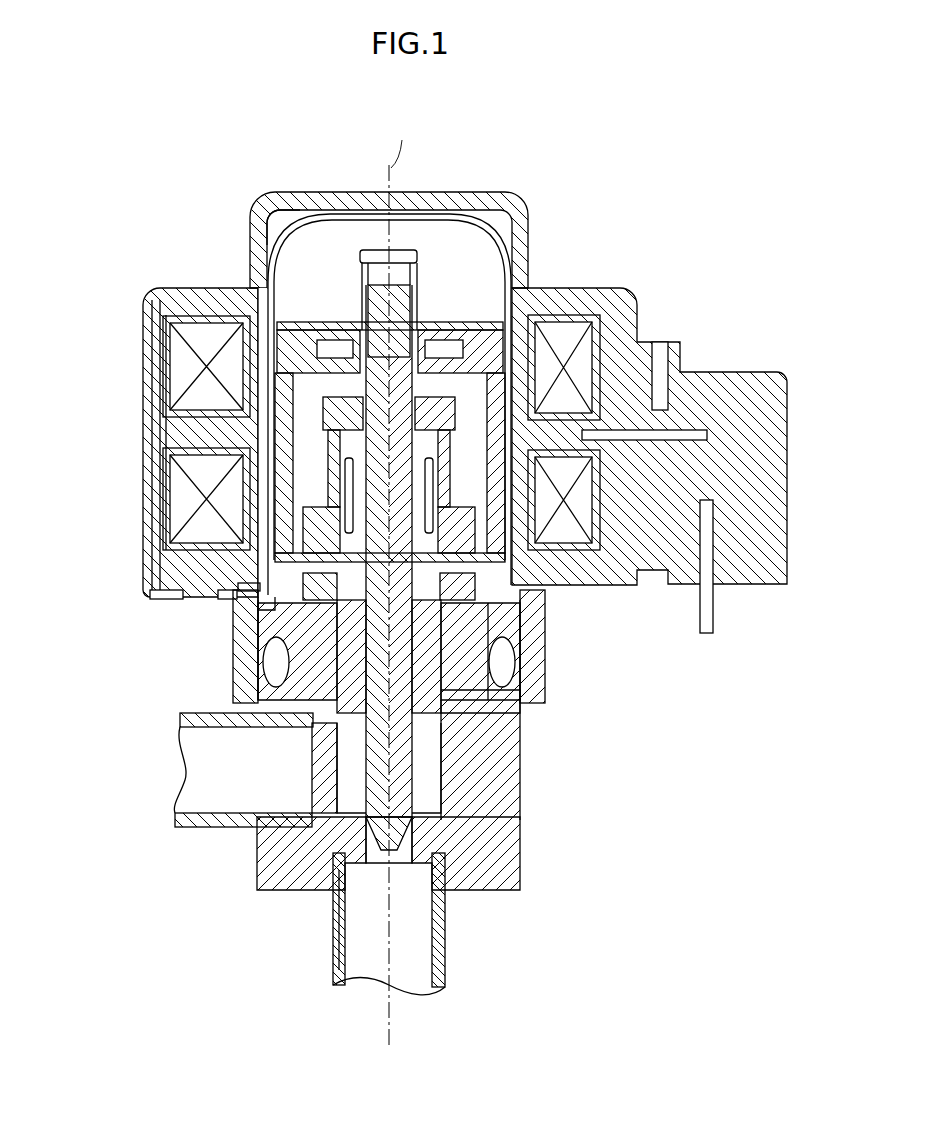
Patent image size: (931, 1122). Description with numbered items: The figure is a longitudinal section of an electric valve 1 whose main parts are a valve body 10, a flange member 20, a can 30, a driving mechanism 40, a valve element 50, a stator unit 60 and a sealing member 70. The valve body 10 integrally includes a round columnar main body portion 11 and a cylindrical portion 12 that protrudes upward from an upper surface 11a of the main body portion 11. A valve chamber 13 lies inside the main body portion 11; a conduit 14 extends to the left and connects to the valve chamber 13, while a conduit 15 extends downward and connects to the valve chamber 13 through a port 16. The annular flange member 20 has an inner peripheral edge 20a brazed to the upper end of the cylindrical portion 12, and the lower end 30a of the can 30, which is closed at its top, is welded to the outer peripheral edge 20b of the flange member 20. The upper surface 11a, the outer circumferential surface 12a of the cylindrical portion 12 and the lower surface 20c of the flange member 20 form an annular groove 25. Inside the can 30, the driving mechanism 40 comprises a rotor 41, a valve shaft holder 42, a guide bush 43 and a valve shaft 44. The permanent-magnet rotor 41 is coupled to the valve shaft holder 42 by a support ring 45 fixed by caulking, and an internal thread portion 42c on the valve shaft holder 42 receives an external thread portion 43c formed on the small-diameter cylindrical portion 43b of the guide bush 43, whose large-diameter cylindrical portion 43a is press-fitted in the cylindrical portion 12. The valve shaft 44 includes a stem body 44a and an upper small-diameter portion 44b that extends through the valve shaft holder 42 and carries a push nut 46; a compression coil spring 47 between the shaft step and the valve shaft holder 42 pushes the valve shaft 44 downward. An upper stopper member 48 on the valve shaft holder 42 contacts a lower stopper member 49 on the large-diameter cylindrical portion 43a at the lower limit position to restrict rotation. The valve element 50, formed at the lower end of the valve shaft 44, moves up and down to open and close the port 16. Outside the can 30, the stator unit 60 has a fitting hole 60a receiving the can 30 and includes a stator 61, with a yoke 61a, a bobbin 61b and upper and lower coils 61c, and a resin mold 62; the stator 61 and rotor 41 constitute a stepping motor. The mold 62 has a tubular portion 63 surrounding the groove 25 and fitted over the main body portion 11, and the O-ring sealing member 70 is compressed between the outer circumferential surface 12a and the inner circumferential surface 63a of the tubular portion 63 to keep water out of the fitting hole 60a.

The electric valve 1 is at (408, 571).
The valve body 10 is at (525, 880).
The main body portion 11 is at (530, 810).
The upper surface 11a is at (525, 690).
The cylindrical portion 12 is at (300, 690).
The outer circumferential surface 12a is at (540, 650).
The valve chamber 13 is at (430, 790).
The conduit 14 is at (222, 827).
The conduit 15 is at (445, 930).
The port 16 is at (410, 845).
The flange member 20 is at (240, 640).
The inner peripheral edge 20a is at (250, 588).
The outer peripheral edge 20b is at (248, 660).
The lower surface 20c is at (545, 625).
The groove 25 is at (500, 705).
The can 30 is at (408, 382).
The lower end 30a is at (262, 603).
The driving mechanism 40 is at (339, 252).
The rotor 41 is at (245, 277).
The valve shaft holder 42 is at (335, 385).
The internal thread portion 42c is at (345, 497).
The guide bush 43 is at (310, 550).
The large-diameter cylindrical portion 43a is at (340, 742).
The small-diameter cylindrical portion 43b is at (330, 472).
The external thread portion 43c is at (340, 520).
The valve shaft 44 is at (370, 800).
The stem body 44a is at (365, 775).
The upper small-diameter portion 44b is at (418, 260).
The support ring 45 is at (248, 247).
The push nut 46 is at (343, 316).
The compression coil spring 47 is at (165, 327).
The upper stopper member 48 is at (618, 600).
The lower stopper member 49 is at (645, 612).
The valve element 50 is at (335, 926).
The stator unit 60 is at (487, 192).
The fitting hole 60a is at (253, 216).
The stator 61 is at (144, 442).
The yoke 61a is at (165, 437).
The bobbin 61b is at (165, 412).
The coil 61c is at (165, 392).
The mold 62 is at (582, 288).
The tubular portion 63 is at (510, 700).
The inner circumferential surface 63a is at (530, 670).
The sealing member 70 is at (275, 665).